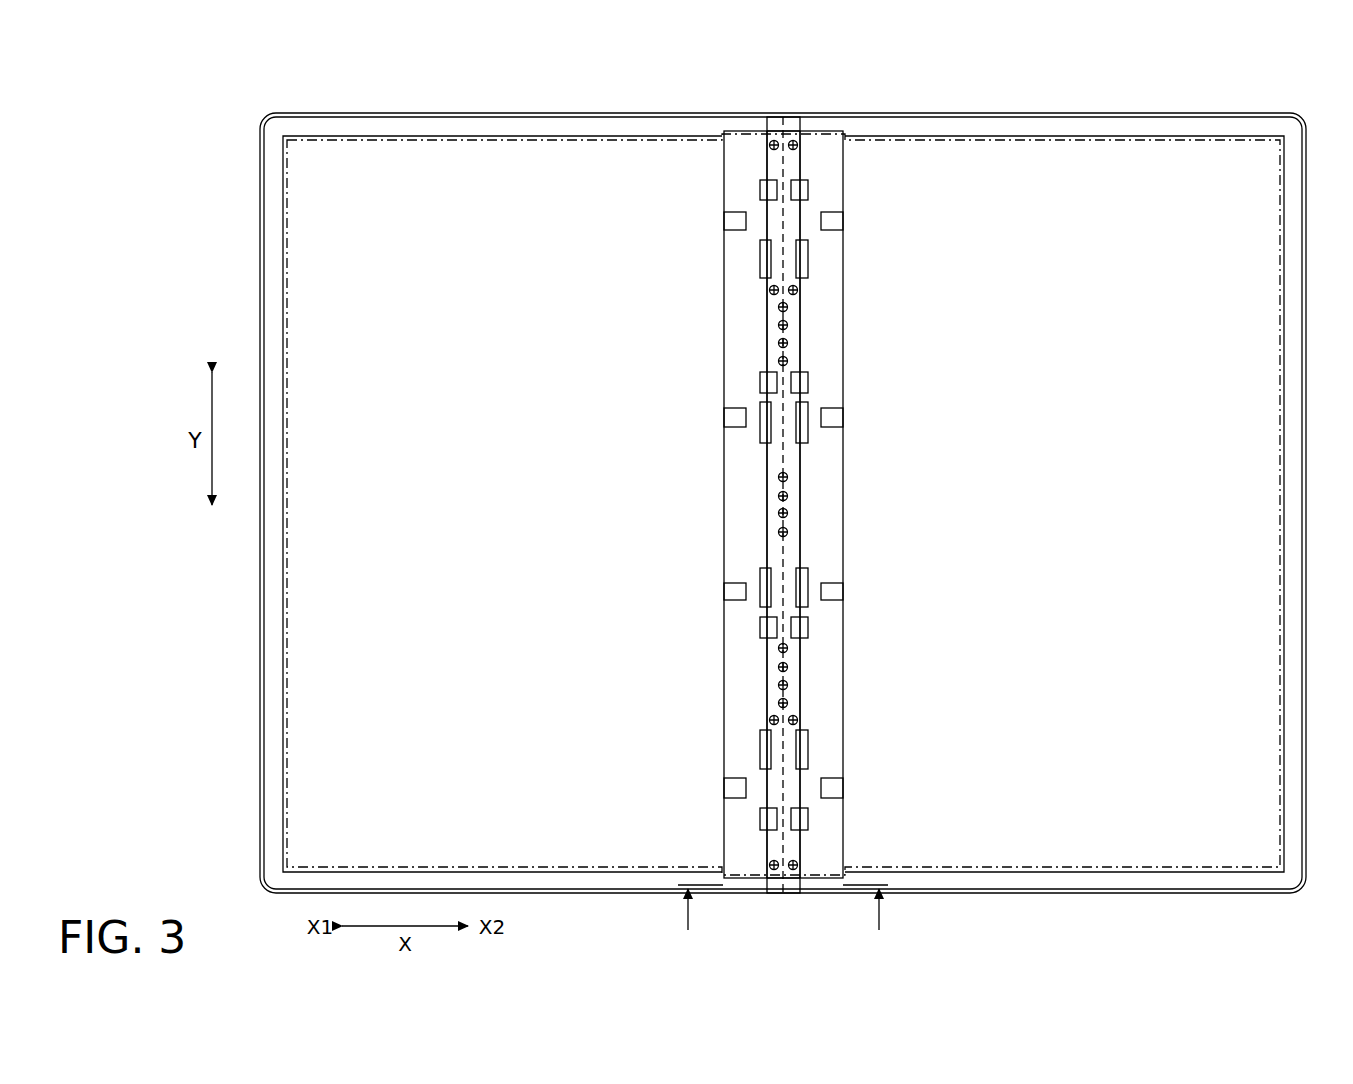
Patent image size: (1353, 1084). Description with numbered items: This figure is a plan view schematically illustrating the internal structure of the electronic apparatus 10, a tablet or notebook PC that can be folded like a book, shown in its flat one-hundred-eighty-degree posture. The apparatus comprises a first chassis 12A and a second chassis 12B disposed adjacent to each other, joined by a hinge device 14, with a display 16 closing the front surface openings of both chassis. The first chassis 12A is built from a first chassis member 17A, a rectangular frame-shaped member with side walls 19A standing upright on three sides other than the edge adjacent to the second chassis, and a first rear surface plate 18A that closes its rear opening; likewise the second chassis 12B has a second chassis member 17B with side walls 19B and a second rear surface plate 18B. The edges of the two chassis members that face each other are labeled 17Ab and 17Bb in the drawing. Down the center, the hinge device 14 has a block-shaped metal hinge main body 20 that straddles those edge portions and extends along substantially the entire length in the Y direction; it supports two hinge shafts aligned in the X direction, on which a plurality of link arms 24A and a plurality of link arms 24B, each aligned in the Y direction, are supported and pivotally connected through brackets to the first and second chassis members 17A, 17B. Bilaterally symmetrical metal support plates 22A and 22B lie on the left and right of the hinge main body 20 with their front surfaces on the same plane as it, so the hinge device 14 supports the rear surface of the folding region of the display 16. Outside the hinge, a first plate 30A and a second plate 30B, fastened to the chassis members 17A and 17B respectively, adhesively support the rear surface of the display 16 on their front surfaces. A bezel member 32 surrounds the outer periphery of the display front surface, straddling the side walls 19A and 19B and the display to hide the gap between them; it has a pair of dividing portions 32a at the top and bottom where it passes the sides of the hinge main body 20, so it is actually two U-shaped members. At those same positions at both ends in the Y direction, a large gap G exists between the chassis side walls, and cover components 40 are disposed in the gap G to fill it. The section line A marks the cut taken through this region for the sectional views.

The electronic apparatus 10 is at (207, 78).
The first chassis 12A is at (418, 102).
The second chassis 12B is at (1125, 102).
The hinge device 14 is at (828, 344).
The display 16 is at (1210, 134).
The first chassis member 17A is at (527, 112).
The second chassis member 17B is at (1042, 112).
The first display portion edge 17Ab is at (775, 459).
The second display portion edge 17Bb is at (775, 459).
The first rear surface plate 18A is at (588, 168).
The second rear surface plate 18B is at (977, 168).
The side walls 19A is at (607, 897).
The side walls 19B is at (957, 897).
The hinge main body 20 is at (774, 328).
The support plate 22A is at (737, 660).
The support plate 22B is at (833, 660).
The link arms 24A is at (762, 243).
The link arms 24B is at (805, 243).
The first plate 30A is at (542, 850).
The second plate 30B is at (1027, 850).
The bezel member 32 is at (270, 250).
The dividing portions 32a is at (793, 125).
The gap G is at (783, 504).
The cover components 40 is at (777, 122).
The section line A is at (783, 923).